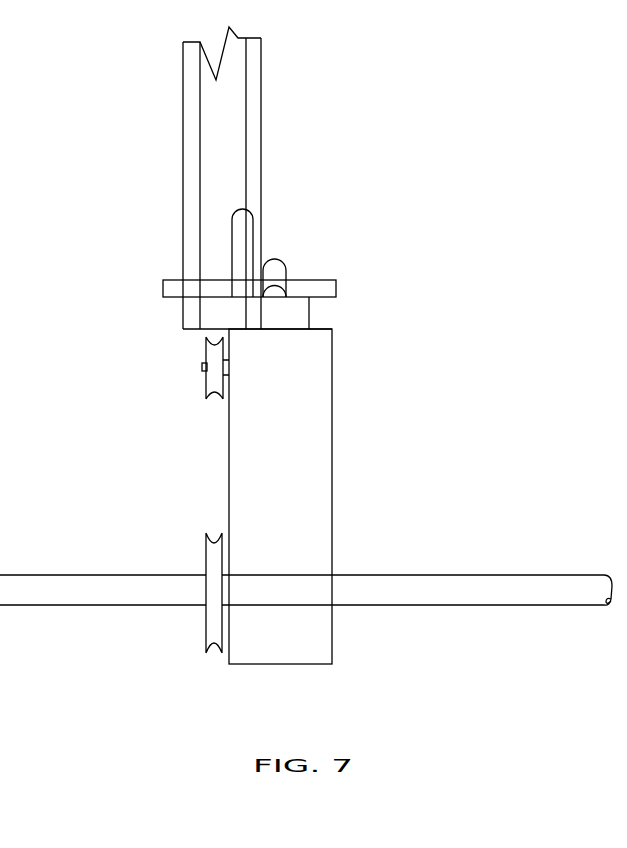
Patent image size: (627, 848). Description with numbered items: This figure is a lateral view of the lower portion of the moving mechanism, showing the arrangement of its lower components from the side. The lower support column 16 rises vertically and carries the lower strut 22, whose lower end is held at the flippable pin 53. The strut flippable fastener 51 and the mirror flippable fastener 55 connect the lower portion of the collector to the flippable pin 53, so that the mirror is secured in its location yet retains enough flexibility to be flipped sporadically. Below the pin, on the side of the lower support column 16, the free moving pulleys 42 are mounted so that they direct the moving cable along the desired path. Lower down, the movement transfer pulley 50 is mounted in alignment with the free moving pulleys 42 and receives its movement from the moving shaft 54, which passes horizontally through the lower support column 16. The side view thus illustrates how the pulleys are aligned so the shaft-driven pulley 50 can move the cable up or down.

The lower strut 22 is at (221, 125).
The flippable pin 53 is at (178, 288).
The strut flippable fastener 51 is at (235, 232).
The mirror flippable fastener 55 is at (272, 273).
The lower support column 16 is at (318, 430).
The moving pulleys 42 is at (217, 359).
The movement transfer pulley 50 is at (215, 548).
The moving shaft 54 is at (417, 588).